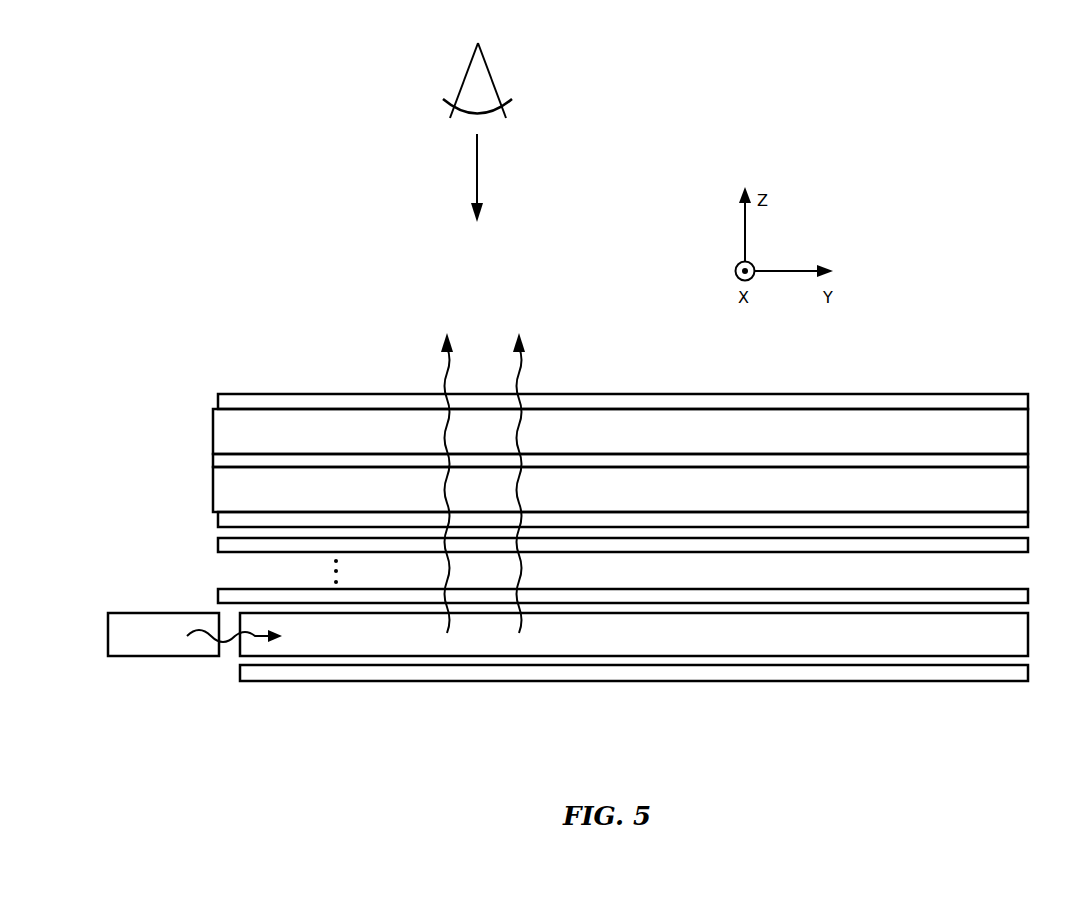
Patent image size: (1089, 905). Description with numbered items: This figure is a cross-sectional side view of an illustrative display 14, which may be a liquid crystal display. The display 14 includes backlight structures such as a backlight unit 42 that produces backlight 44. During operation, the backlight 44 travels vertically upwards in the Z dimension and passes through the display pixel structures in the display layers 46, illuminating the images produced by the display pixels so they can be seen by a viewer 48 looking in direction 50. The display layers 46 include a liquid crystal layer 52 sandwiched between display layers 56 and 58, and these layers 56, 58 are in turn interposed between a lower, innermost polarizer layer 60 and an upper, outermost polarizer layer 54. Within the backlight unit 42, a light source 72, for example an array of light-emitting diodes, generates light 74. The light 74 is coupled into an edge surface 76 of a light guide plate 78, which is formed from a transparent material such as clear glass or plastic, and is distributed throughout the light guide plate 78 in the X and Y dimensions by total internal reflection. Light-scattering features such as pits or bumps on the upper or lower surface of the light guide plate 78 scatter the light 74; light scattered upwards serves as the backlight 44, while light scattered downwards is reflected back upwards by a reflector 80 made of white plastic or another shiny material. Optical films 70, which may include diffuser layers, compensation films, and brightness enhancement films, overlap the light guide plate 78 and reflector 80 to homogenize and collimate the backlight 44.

The display 14 is at (1006, 182).
The backlight unit 42 is at (621, 637).
The backlight 44 is at (519, 373).
The display layers 46 is at (577, 453).
The viewer 48 is at (490, 78).
The direction 50 is at (477, 183).
The liquid crystal layer 52 is at (291, 462).
The upper polarizer layer 54 is at (240, 401).
The display layer 56 is at (223, 430).
The display layer 58 is at (223, 483).
The lower polarizer layer 60 is at (581, 538).
The optical films 70 is at (226, 550).
The light source 72 is at (118, 636).
The light 74 is at (204, 632).
The edge surface 76 is at (240, 646).
The light guide plate 78 is at (330, 648).
The reflector 80 is at (416, 675).